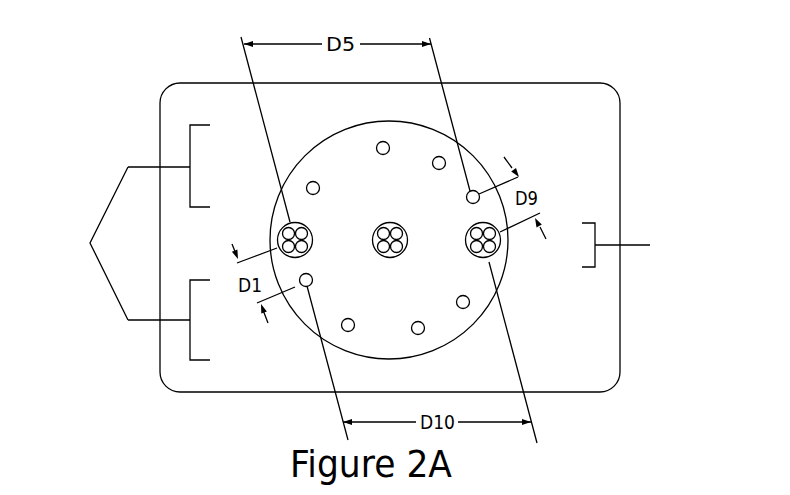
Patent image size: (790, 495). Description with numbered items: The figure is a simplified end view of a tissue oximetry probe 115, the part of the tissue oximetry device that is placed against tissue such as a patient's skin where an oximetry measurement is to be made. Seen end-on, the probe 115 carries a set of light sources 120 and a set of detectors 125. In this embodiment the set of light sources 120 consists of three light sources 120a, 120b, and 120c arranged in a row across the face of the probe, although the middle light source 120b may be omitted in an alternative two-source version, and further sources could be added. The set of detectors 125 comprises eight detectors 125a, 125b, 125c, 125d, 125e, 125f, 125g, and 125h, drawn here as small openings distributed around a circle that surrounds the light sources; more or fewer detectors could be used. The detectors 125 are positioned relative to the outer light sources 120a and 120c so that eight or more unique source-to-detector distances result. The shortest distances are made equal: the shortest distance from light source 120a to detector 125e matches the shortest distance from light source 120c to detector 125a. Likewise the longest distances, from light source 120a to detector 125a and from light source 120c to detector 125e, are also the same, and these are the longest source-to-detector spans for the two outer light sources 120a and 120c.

The tissue oximetry probe 115 is at (620, 103).
The set of light sources 120 is at (634, 245).
The light source 120a is at (280, 233).
The light source 120b is at (376, 232).
The light source 120c is at (500, 245).
The set of detectors 125 is at (129, 242).
The detector 125a is at (466, 196).
The detector 125b is at (436, 157).
The detector 125c is at (377, 143).
The detector 125d is at (320, 190).
The detector 125e is at (304, 287).
The detector 125f is at (349, 332).
The detector 125g is at (425, 333).
The detector 125h is at (470, 307).